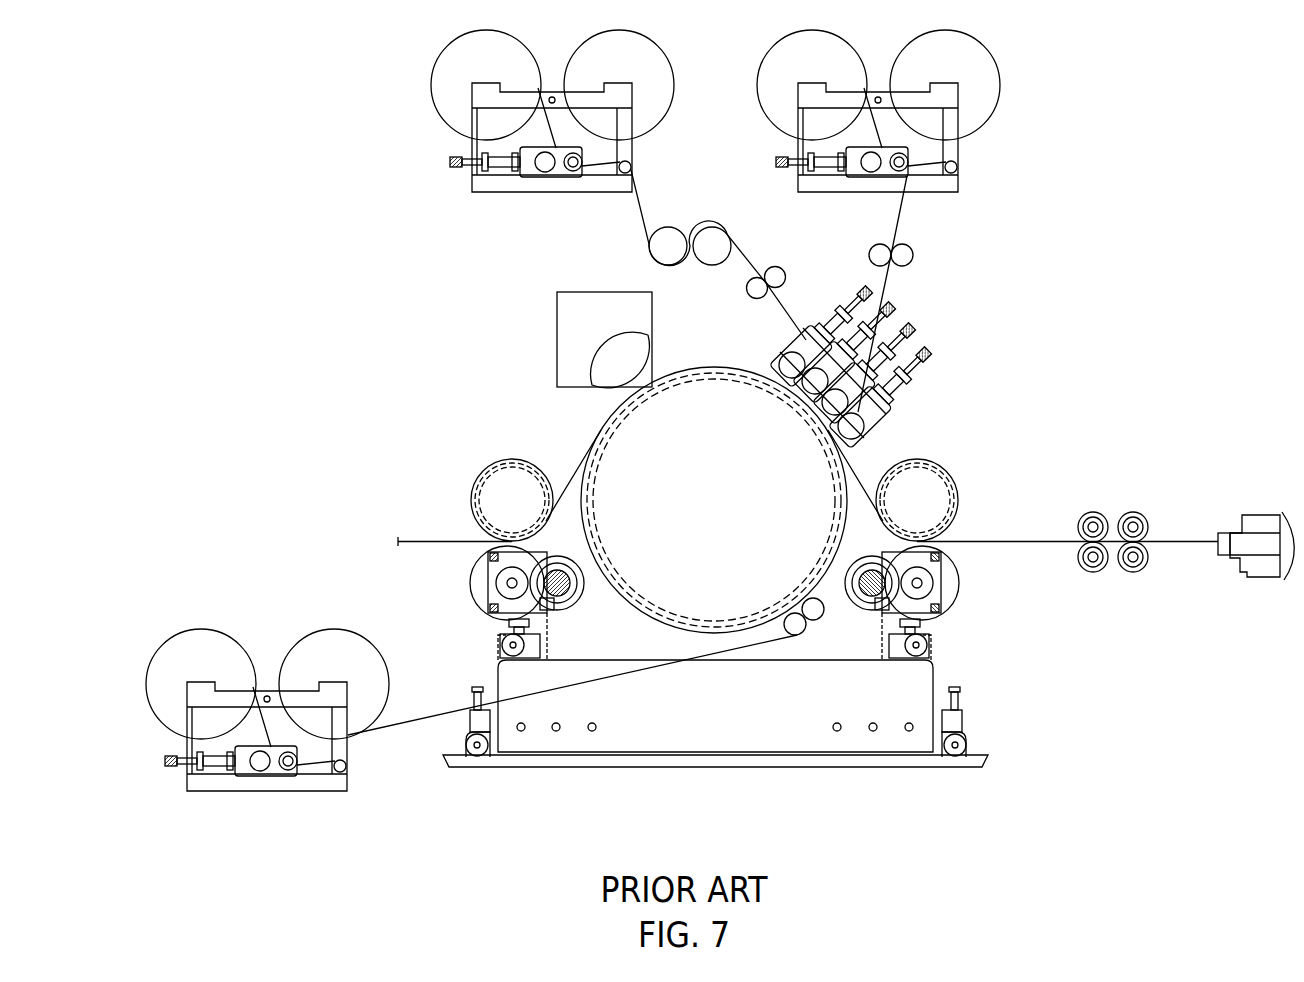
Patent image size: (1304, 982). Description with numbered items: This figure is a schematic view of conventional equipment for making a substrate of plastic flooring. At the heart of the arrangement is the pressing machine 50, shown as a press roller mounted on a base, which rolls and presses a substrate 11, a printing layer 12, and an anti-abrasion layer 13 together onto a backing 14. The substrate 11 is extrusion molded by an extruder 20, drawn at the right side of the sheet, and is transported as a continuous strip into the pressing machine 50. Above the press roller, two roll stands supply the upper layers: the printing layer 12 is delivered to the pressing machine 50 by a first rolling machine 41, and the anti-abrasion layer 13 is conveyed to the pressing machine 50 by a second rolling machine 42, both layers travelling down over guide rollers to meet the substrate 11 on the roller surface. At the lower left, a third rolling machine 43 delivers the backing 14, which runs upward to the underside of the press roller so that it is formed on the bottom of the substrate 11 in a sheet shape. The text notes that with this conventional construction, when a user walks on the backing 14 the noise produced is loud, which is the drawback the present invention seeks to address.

The substrate 11 is at (1029, 540).
The printing layer 12 is at (902, 212).
The anti-abrasion layer 13 is at (638, 204).
The backing 14 is at (416, 718).
The extruder 20 is at (1266, 520).
The first rolling machine 41 is at (955, 147).
The second rolling machine 42 is at (478, 148).
The third rolling machine 43 is at (275, 615).
The pressing machine 50 is at (696, 728).